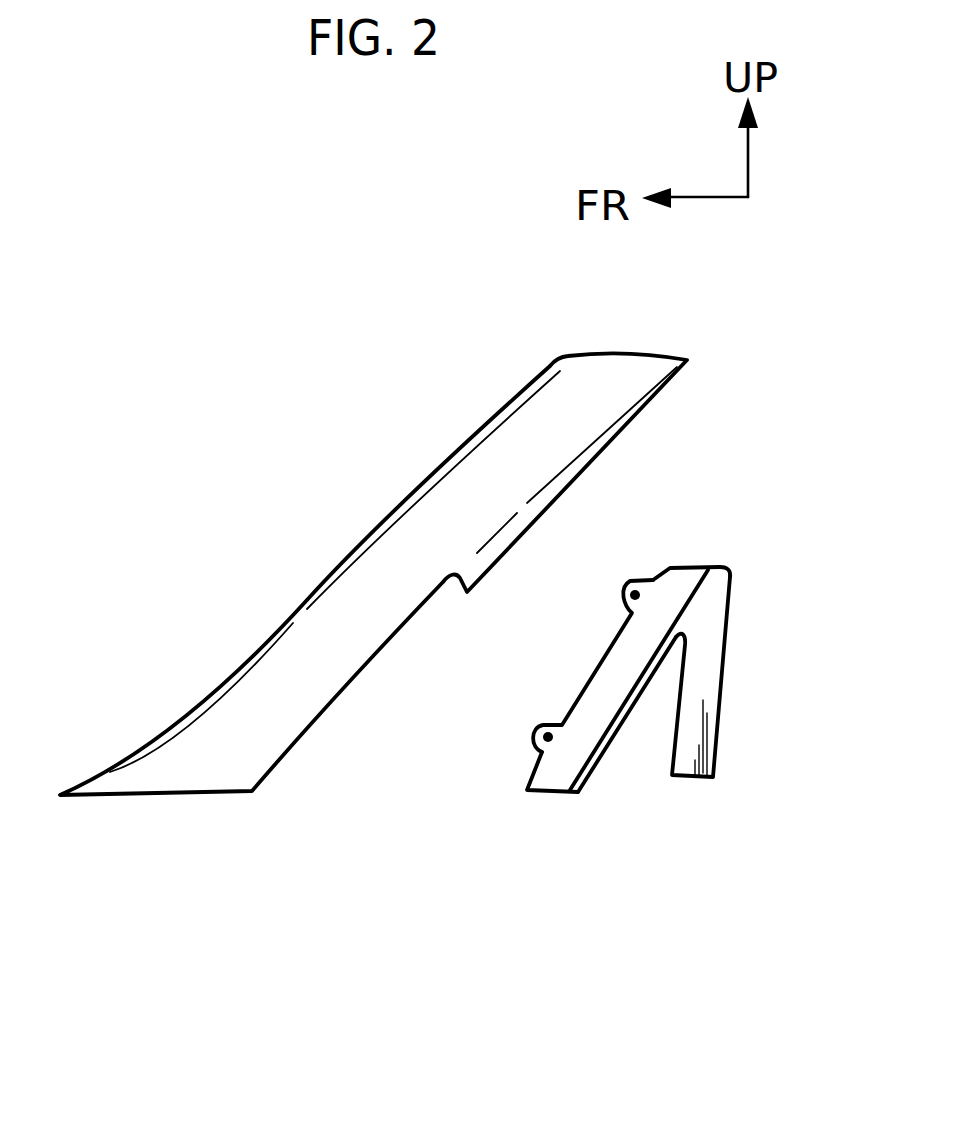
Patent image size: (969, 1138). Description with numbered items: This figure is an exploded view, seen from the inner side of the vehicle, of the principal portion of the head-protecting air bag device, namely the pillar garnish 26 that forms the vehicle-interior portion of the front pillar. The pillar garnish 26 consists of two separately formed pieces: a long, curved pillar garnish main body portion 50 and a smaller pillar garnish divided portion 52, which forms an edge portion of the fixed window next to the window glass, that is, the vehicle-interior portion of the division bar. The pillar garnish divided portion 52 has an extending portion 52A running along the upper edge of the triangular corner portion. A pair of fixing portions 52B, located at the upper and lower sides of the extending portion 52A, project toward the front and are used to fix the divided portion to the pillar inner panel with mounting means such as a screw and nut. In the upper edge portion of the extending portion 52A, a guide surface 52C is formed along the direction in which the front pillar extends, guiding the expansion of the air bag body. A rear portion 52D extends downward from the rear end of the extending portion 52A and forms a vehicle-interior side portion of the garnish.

The pillar garnish 26 is at (538, 925).
The pillar garnish main body portion 50 is at (252, 812).
The pillar garnish divided portion 52 is at (662, 699).
The extending portion 52A is at (624, 705).
The fixing portions 52B is at (623, 595).
The guide surface 52C is at (656, 597).
The rear portion 52D is at (708, 675).